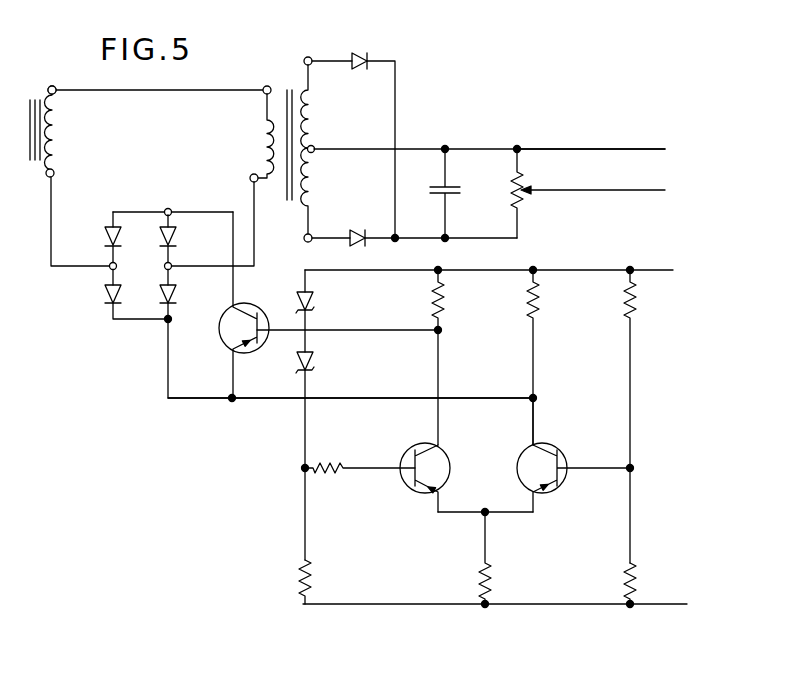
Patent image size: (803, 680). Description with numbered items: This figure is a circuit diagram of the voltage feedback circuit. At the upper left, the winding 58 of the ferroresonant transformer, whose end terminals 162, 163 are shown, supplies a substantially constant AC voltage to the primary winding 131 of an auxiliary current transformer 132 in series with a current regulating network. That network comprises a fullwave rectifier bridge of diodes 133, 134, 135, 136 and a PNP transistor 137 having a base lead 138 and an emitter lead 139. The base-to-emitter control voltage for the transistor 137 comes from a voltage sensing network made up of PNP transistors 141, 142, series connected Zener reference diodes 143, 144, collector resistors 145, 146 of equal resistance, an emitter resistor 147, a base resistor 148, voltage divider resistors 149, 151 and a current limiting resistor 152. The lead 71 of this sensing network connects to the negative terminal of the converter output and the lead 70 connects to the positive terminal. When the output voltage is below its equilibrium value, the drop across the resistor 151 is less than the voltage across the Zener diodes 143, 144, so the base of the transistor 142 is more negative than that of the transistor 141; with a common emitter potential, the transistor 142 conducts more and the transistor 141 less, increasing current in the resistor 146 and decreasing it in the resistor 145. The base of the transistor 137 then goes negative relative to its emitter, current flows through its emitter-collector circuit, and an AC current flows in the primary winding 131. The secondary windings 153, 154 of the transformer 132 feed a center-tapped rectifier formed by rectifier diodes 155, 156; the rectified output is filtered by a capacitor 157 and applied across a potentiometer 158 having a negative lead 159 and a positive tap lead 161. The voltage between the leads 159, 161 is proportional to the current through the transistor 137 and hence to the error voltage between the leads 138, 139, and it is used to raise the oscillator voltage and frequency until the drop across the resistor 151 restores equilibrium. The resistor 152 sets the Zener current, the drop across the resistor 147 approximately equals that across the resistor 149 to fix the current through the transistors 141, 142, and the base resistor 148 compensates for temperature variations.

The winding 58 is at (55, 138).
The end terminal 162 is at (55, 167).
The end terminal 163 is at (57, 98).
The primary winding 131 is at (272, 150).
The auxiliary current transformer 132 is at (290, 85).
The diode 133 is at (107, 225).
The diode 134 is at (100, 295).
The diode 135 is at (178, 239).
The diode 136 is at (158, 290).
The PNP transistor 137 is at (226, 306).
The base lead 138 is at (352, 328).
The emitter lead 139 is at (452, 396).
The PNP transistor 141 is at (408, 448).
The PNP transistor 142 is at (553, 450).
The Zener reference diode 143 is at (291, 296).
The Zener reference diode 144 is at (314, 370).
The transistor collector resistor 145 is at (432, 292).
The transistor collector resistor 146 is at (527, 298).
The emitter resistor 147 is at (488, 578).
The base resistor 148 is at (341, 468).
The voltage divider resistor 149 is at (620, 572).
The voltage divider resistor 151 is at (622, 298).
The current limiting resistor 152 is at (310, 580).
The secondary winding 153 is at (311, 118).
The secondary winding 154 is at (311, 172).
The rectifier diode 155 is at (360, 56).
The rectifier diode 156 is at (358, 231).
The capacitor 157 is at (440, 187).
The potentiometer 158 is at (510, 182).
The lead 159 is at (608, 149).
The tap lead 161 is at (580, 190).
The lead 70 is at (647, 601).
The lead 71 is at (655, 276).